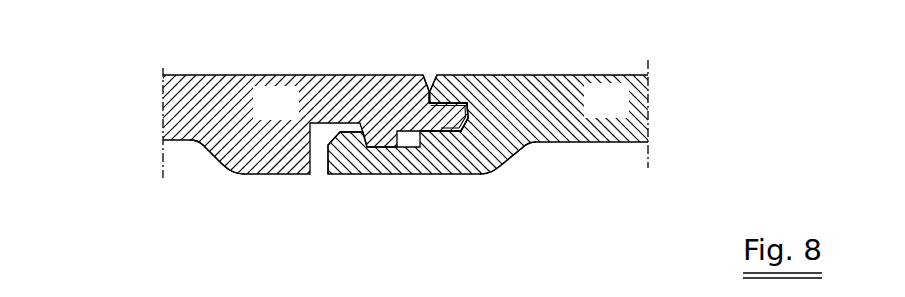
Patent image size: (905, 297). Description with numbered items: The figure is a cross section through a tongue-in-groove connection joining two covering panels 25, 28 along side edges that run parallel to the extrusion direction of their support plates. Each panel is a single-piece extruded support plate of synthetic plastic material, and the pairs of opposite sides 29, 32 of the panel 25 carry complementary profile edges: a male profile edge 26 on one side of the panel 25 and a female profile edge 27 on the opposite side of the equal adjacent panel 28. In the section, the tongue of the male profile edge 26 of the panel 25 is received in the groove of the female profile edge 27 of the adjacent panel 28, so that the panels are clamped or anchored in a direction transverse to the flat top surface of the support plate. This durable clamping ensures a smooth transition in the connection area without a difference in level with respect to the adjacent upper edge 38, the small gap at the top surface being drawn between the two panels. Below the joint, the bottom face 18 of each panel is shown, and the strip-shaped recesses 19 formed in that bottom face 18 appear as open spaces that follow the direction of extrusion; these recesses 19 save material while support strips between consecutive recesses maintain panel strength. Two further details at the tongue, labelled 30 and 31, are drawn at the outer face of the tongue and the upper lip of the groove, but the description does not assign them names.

The covering panel 25 is at (293, 117).
The adjacent covering panel 28 is at (623, 116).
The male profile edge 26 is at (365, 78).
The adjacent upper edge 38 is at (397, 56).
The upper lip of groove 31 is at (493, 49).
The sealing layer on tongue 30 is at (528, 72).
The side 29 is at (405, 171).
The female profile edge 27 is at (423, 180).
The opposite side 32 is at (314, 195).
The bottom face 18 is at (221, 184).
The strip-shaped recess 19 is at (539, 185).